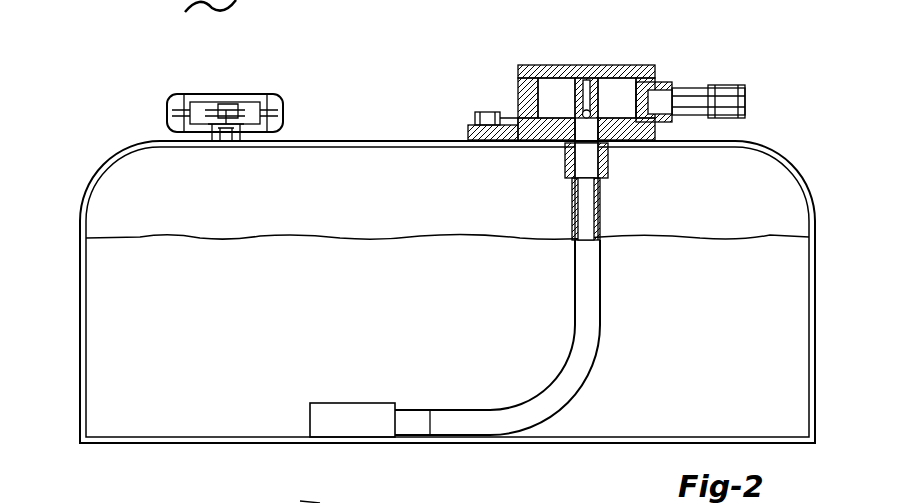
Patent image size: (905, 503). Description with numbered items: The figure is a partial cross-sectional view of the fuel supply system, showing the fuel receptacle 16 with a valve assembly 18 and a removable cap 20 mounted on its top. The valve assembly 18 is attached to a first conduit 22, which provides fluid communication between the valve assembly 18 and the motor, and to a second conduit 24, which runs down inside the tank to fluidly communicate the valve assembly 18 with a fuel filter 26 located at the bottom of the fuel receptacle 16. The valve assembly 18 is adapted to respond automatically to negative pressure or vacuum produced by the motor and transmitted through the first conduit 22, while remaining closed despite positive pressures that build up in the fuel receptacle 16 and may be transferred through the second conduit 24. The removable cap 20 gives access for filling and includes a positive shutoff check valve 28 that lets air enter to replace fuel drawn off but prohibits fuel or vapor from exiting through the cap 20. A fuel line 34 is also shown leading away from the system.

The fuel receptacle 16 is at (97, 180).
The valve assembly 18 is at (716, 50).
The removable cap 20 is at (277, 94).
The first conduit 22 is at (732, 92).
The second conduit 24 is at (603, 220).
The fuel filter 26 is at (368, 433).
The positive shutoff check valve 28 is at (215, 108).
The fuel line 34 is at (305, 502).